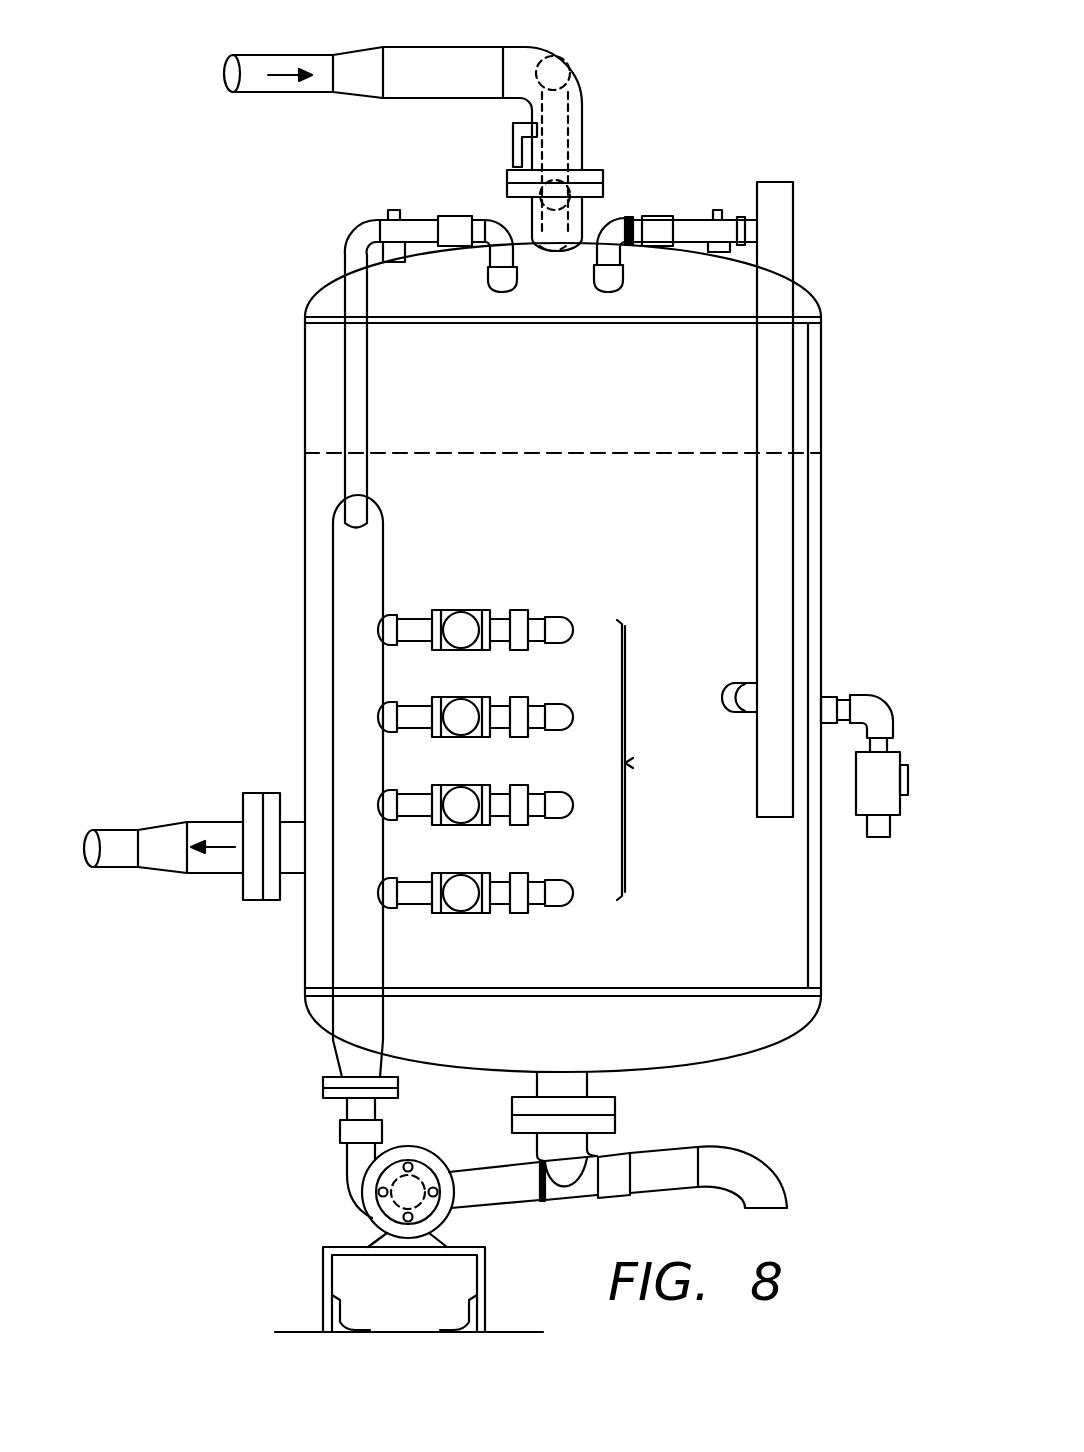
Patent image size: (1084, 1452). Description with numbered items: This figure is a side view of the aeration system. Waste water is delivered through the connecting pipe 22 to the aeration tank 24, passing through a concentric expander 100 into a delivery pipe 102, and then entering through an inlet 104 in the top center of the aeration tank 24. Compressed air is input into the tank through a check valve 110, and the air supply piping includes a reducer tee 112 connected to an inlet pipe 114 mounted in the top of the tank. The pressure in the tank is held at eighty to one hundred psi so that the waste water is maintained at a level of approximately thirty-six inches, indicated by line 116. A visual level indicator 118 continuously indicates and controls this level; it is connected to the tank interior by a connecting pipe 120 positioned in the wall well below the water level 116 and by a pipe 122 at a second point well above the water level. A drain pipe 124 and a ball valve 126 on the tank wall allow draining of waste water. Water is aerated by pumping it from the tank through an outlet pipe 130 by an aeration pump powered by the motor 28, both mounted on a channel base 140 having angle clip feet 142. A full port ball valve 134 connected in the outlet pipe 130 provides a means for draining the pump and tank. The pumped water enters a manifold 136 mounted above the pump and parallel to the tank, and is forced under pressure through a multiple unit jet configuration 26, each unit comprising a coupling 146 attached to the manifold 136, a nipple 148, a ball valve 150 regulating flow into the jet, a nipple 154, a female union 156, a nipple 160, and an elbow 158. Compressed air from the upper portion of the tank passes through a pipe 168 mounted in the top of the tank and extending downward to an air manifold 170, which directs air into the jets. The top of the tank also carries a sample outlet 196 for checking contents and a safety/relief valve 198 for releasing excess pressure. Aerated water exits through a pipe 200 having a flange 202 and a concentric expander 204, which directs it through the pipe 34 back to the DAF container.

The connecting pipe 22 is at (273, 93).
The aeration tank 24 is at (571, 423).
The multiple unit jet configuration 26 is at (640, 760).
The motor 28 is at (363, 1196).
The pipe 34 is at (112, 830).
The concentric expander 100 is at (362, 52).
The delivery pipe 102 is at (430, 50).
The inlet 104 is at (525, 219).
The check valve 110 is at (585, 92).
The reducer tee 112 is at (600, 226).
The inlet pipe 114 is at (552, 260).
The water level line 116 is at (668, 453).
The visual level indicator 118 is at (783, 487).
The connecting pipe 120 is at (735, 688).
The pipe 122 is at (690, 220).
The drain pipe 124 is at (866, 698).
The ball valve 126 is at (894, 817).
The outlet pipe 130 is at (572, 1077).
The full port ball valve 134 is at (658, 1184).
The manifold 136 is at (342, 1017).
The channel base 140 is at (323, 1275).
The angle clip feet 142 is at (345, 1325).
The coupling 146 is at (396, 703).
The nipple 148 is at (412, 618).
The ball valve 150 is at (461, 612).
The nipple 154 is at (497, 642).
The female union 156 is at (518, 610).
The elbow 158 is at (562, 622).
The nipple 160 is at (540, 705).
The pipe 168 is at (414, 222).
The air manifold 170 is at (380, 504).
The sample outlet 196 is at (718, 212).
The safety/relief valve 198 is at (388, 213).
The pipe 200 is at (291, 822).
The flange 202 is at (250, 794).
The concentric expander 204 is at (162, 873).